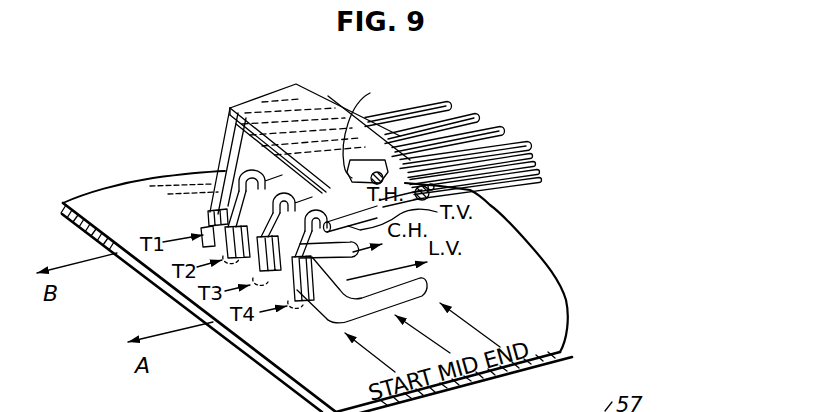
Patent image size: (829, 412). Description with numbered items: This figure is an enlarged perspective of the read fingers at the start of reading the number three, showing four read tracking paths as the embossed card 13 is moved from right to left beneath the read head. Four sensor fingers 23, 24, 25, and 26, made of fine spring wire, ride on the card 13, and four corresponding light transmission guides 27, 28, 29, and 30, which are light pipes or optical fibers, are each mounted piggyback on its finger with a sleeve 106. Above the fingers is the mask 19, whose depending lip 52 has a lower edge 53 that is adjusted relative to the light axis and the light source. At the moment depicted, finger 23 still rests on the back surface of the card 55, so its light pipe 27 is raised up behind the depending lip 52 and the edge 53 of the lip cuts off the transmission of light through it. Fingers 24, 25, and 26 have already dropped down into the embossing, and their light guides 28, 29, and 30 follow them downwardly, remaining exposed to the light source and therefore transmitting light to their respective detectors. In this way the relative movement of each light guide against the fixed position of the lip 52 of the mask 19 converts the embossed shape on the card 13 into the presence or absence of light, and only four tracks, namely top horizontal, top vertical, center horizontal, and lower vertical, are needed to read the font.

The card 13 is at (527, 308).
The mask 19 is at (298, 99).
The lower edge of the lip 53 is at (234, 138).
The depending lip 52 is at (300, 163).
The sleeve 106 is at (345, 105).
The surface of the card 55 is at (187, 233).
The light transmission guide 30 is at (447, 101).
The sensor finger 26 is at (474, 113).
The light transmission guide 29 is at (500, 130).
The sensor finger 25 is at (492, 142).
The light transmission guide 28 is at (530, 155).
The sensor finger 24 is at (533, 163).
The light transmission guide 27 is at (538, 173).
The sensor finger 23 is at (538, 182).